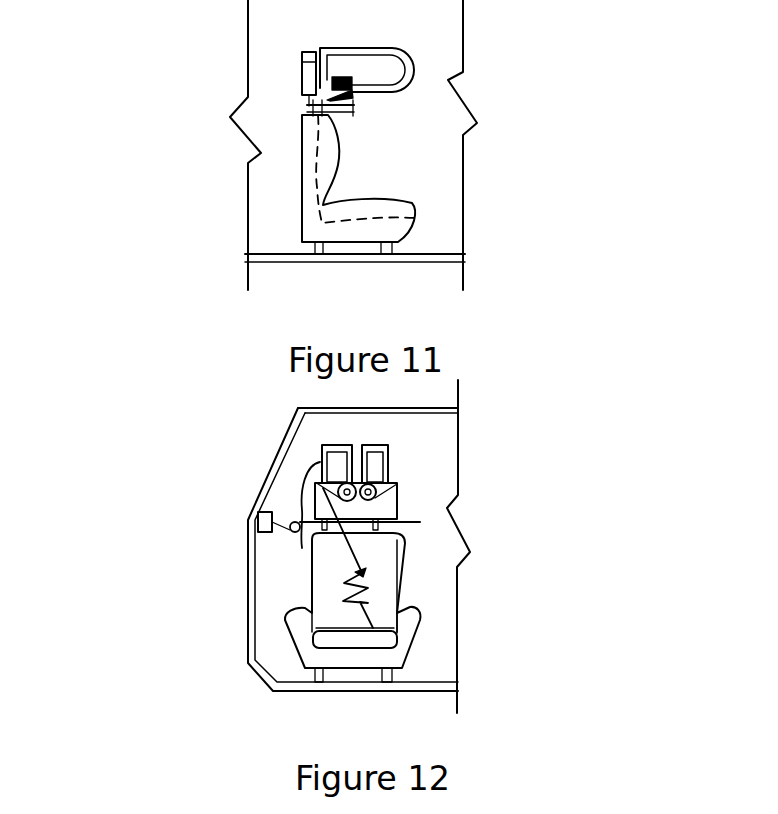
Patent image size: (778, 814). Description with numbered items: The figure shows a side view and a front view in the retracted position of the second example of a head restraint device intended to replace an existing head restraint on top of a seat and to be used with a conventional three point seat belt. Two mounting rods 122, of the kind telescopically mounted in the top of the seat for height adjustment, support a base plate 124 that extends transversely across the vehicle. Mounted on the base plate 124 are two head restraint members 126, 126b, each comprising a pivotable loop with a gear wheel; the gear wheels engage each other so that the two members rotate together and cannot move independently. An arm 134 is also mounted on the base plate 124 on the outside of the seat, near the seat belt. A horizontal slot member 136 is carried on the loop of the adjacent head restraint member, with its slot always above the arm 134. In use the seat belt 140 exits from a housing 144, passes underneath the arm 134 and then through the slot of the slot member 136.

In FIG. 12, the mounting rods 122 is at (420, 522).
In FIG. 11, the base plate 124 is at (303, 73).
In FIG. 12, the base plate 124 is at (389, 506).
In FIG. 11, the head restraint member 126 is at (420, 52).
In FIG. 12, the head restraint member 126b is at (322, 445).
In FIG. 12, the arm 134 is at (291, 535).
In FIG. 12, the horizontal slot member 136 is at (338, 486).
In FIG. 11, the seat belt 140 is at (353, 227).
In FIG. 12, the seat belt 140 is at (357, 657).
In FIG. 12, the housing 144 is at (258, 522).